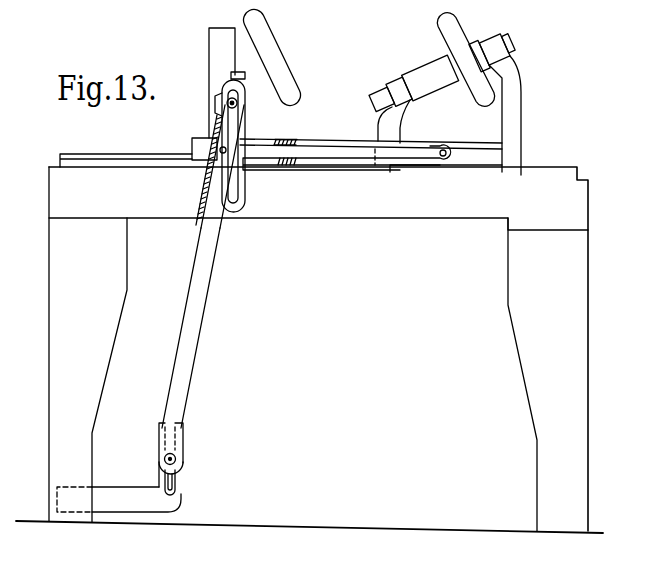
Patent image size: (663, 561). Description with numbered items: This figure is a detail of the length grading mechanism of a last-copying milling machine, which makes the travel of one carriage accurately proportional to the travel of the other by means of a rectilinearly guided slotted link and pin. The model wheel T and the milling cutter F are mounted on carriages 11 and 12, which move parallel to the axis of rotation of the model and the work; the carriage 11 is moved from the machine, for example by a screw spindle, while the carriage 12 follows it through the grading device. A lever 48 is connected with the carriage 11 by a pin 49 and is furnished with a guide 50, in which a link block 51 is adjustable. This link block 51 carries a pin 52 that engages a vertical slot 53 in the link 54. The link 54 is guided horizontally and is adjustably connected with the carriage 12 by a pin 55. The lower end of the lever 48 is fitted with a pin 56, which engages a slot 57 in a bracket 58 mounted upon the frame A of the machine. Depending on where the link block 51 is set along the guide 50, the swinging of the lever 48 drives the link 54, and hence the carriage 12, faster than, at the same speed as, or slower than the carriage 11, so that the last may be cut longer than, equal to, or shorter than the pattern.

The carriage 11 is at (220, 52).
The model wheel T is at (267, 48).
The link block 51 is at (240, 91).
The pin 52 is at (237, 104).
The guide 50 is at (233, 128).
The pin 49 is at (219, 150).
The vertical slot 53 is at (232, 193).
The link 54 is at (303, 146).
The frame A is at (282, 165).
The pin 55 is at (432, 141).
The carriage 12 is at (517, 103).
The milling cutter F is at (449, 22).
The lever 48 is at (196, 321).
The pin 56 is at (176, 460).
The slot 57 is at (173, 488).
The bracket 58 is at (97, 496).